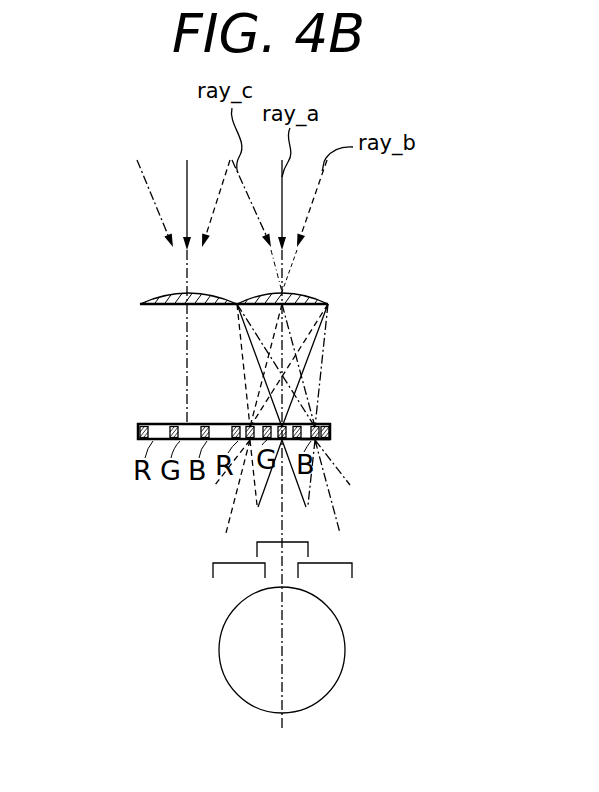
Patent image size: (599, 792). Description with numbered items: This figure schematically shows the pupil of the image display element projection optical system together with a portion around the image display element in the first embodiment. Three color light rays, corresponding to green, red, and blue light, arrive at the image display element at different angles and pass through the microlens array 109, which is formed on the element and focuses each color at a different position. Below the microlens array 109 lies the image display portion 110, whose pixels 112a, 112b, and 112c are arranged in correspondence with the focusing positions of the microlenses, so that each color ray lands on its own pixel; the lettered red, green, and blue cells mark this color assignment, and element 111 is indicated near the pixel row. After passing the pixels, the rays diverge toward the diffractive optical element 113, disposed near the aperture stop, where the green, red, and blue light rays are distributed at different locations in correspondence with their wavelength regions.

The microlens array 109 is at (316, 292).
The image display portion 110 is at (331, 429).
The pixel 111 is at (329, 440).
The pixel 112a is at (252, 425).
The pixel 112b is at (280, 424).
The pixel 112c is at (317, 424).
The diffractive optical element 113 is at (344, 621).